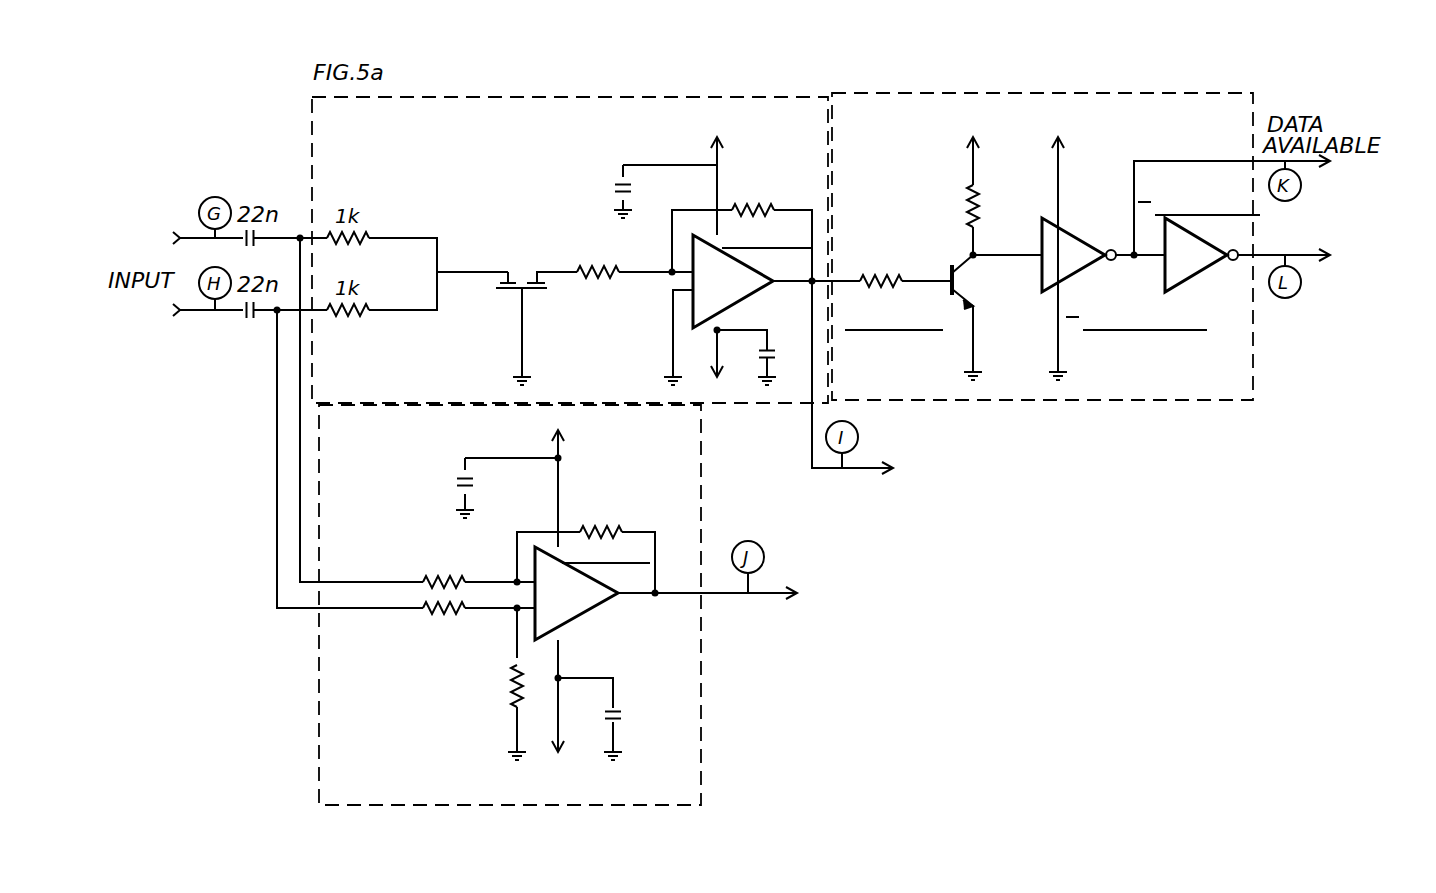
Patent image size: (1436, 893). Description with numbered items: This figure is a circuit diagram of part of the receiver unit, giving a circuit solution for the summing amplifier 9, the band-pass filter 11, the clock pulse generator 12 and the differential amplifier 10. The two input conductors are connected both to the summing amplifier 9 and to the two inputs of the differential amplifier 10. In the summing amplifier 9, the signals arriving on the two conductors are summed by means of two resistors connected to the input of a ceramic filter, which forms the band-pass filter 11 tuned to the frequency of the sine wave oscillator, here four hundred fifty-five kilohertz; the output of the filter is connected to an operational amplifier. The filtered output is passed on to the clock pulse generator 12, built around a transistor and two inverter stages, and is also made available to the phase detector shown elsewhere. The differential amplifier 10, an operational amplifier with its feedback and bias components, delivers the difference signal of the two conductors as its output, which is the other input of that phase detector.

The summing amplifier 9 is at (570, 234).
The band-pass filter 11 is at (688, 97).
The clock pulse generator 12 is at (1032, 93).
The differential amplifier 10 is at (702, 745).